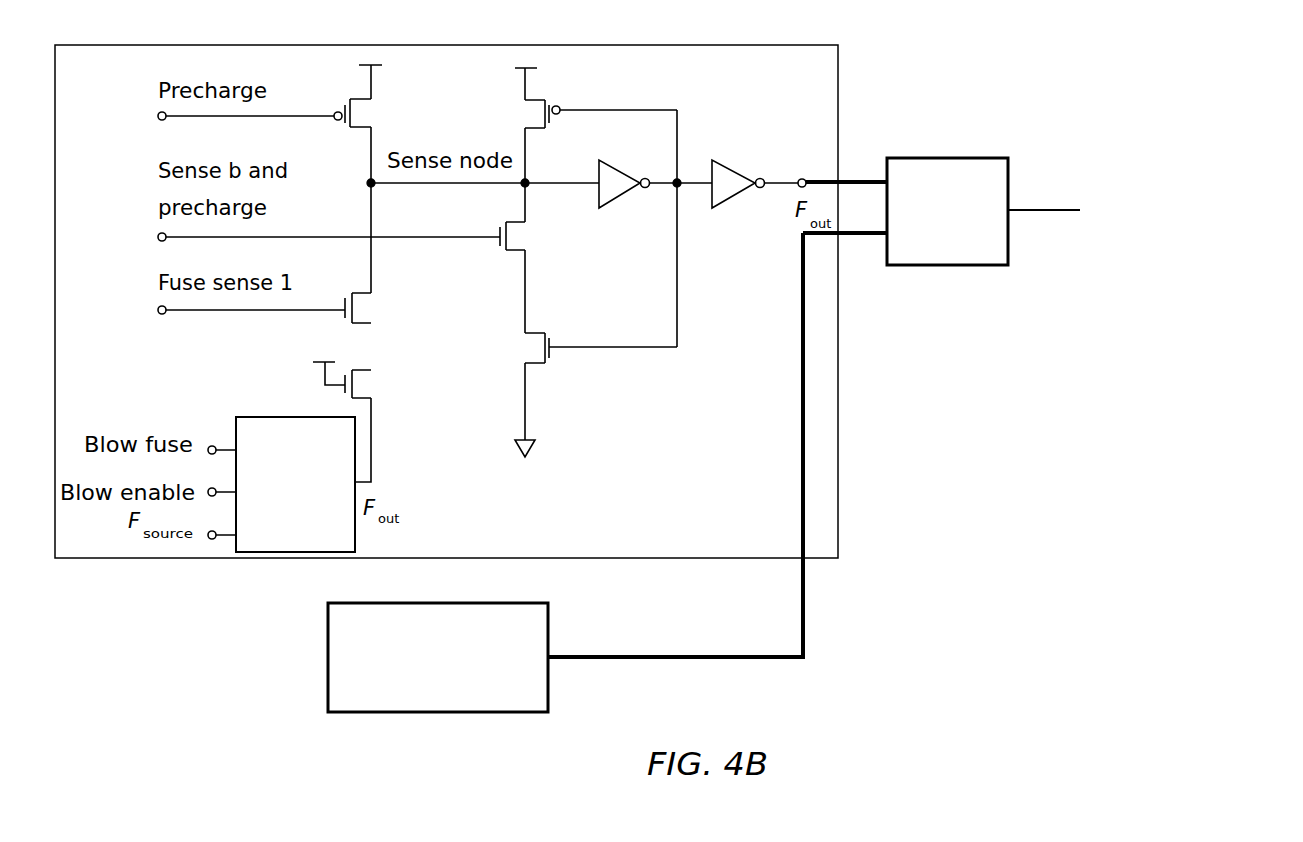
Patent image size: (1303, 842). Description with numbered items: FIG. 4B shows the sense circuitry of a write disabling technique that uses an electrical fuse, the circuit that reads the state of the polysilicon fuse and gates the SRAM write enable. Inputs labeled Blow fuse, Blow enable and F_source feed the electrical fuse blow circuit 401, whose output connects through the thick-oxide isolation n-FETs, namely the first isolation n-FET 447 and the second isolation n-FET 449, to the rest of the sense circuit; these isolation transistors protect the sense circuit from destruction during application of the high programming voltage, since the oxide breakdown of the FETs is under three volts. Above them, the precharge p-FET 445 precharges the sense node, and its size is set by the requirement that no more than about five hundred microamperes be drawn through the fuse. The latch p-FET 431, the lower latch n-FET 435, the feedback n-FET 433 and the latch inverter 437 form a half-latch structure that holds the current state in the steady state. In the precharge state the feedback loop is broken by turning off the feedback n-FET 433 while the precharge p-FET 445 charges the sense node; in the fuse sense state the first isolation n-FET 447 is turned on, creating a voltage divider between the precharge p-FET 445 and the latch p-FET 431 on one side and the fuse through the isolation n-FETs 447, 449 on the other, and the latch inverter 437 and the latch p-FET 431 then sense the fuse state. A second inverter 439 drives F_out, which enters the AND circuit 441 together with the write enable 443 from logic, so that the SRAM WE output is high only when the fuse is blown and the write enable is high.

The electrical fuse blow circuit 401 is at (291, 554).
The p-FET P1 431 is at (543, 98).
The n-FET N15 433 is at (506, 253).
The n-FET N14 435 is at (546, 333).
The inverter I28 437 is at (600, 160).
The output inverter 439 is at (716, 162).
The AND circuit 441 is at (897, 158).
The write enable 443 is at (548, 603).
The p-FET P8 445 is at (350, 130).
The n-FET N1 447 is at (364, 291).
The n-FET N4 449 is at (363, 368).